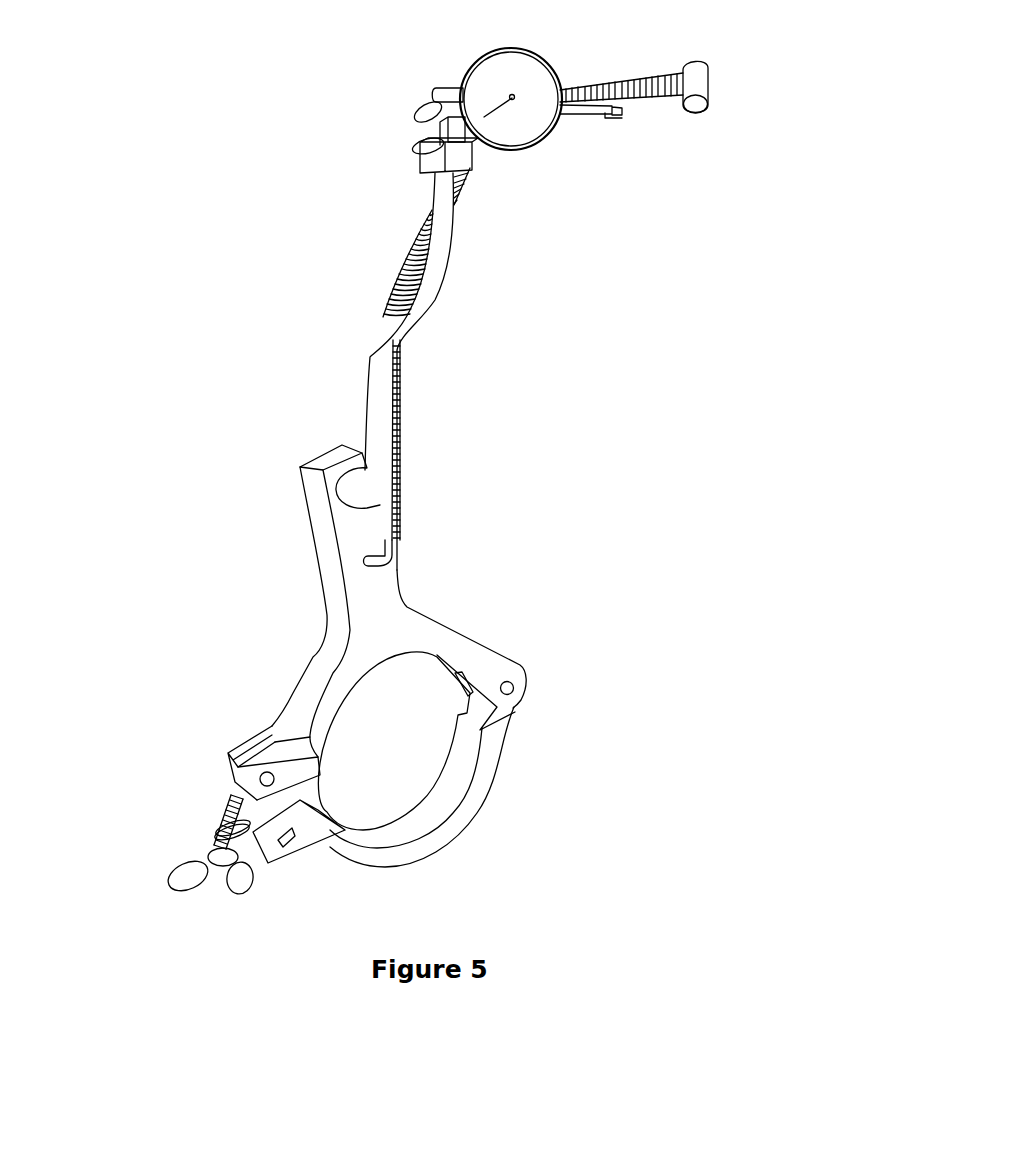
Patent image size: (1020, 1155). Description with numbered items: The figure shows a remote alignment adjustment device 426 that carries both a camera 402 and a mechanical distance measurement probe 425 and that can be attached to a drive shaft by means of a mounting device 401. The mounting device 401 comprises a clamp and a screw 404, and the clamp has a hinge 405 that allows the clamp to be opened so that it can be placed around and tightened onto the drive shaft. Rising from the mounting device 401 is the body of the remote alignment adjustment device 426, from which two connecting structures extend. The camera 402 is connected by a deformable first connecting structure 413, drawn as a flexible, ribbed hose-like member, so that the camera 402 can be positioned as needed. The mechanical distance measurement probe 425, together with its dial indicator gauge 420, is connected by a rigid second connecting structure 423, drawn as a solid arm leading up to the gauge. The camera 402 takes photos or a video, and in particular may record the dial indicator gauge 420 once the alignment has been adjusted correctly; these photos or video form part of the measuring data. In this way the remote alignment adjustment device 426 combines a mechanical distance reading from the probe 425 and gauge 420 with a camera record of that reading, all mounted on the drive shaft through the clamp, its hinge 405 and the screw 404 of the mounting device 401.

The dial indicator gauge 420 is at (498, 80).
The camera 402 is at (700, 86).
The mechanical distance measurement probe 425 is at (580, 111).
The deformable first connecting structure 413 is at (403, 256).
The rigid second connecting structure 423 is at (423, 292).
The remote alignment adjustment device 426 is at (318, 518).
The mounting device 401 is at (430, 640).
The hinge 405 is at (500, 668).
The screw 404 is at (192, 867).